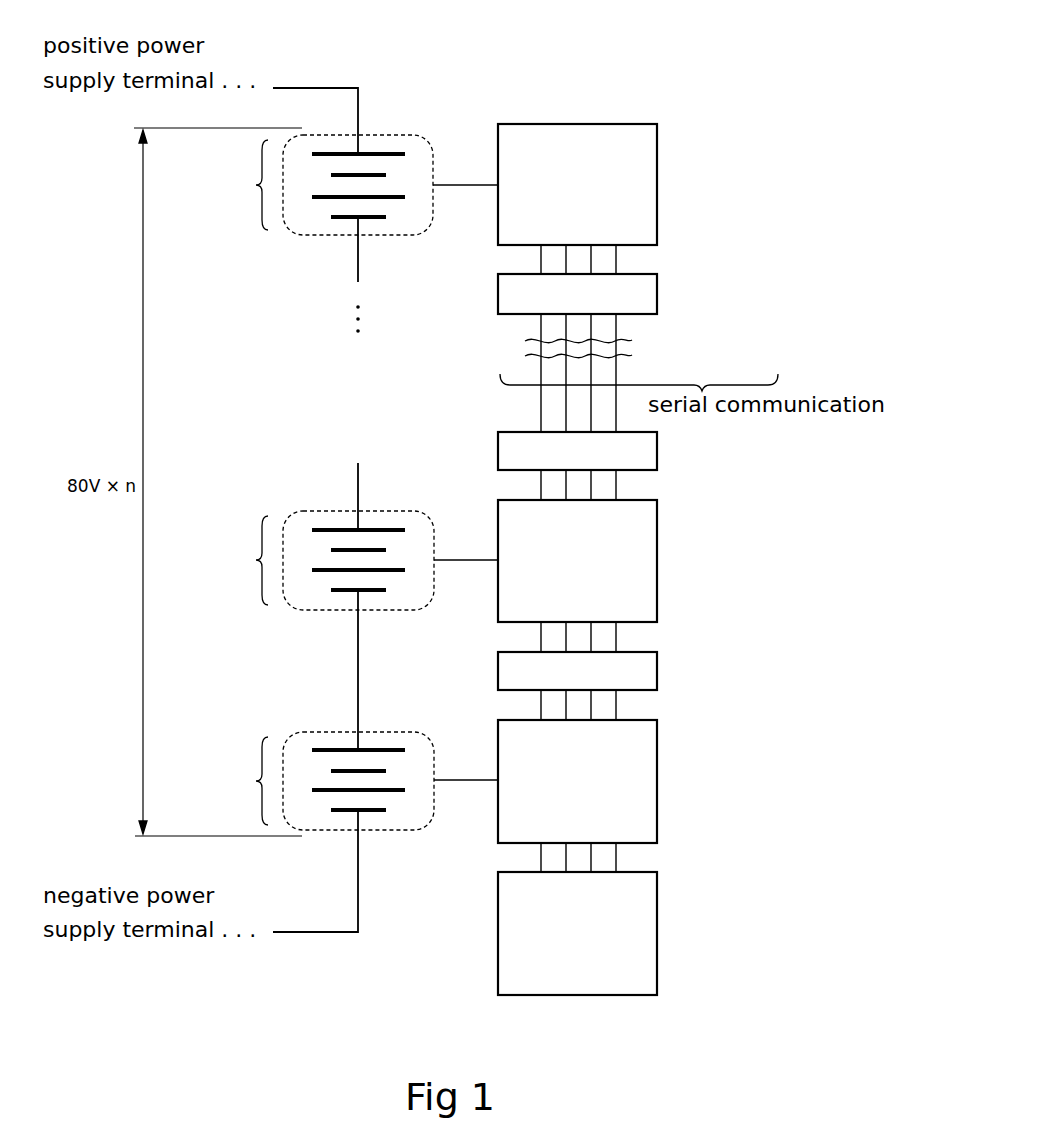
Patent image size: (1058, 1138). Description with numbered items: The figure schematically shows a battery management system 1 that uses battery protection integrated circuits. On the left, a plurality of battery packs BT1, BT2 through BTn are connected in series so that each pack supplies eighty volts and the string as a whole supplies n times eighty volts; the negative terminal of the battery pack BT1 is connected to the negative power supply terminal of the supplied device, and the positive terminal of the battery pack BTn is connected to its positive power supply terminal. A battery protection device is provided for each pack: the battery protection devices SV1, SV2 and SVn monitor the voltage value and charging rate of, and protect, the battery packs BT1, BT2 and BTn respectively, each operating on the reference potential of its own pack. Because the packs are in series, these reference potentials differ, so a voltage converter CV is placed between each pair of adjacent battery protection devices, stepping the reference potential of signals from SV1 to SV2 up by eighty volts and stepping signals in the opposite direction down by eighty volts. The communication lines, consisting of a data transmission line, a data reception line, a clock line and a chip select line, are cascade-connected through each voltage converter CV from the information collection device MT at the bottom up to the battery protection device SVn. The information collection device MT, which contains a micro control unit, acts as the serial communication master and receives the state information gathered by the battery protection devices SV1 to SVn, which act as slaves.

The battery management system 1 is at (696, 61).
The battery pack BTn is at (323, 237).
The battery pack BT2 is at (323, 612).
The battery pack BT1 is at (323, 832).
The battery protection device SVn is at (657, 185).
The battery protection device SV2 is at (657, 560).
The battery protection device SV1 is at (657, 780).
The voltage converter CV is at (657, 670).
The information collection device MT is at (657, 932).